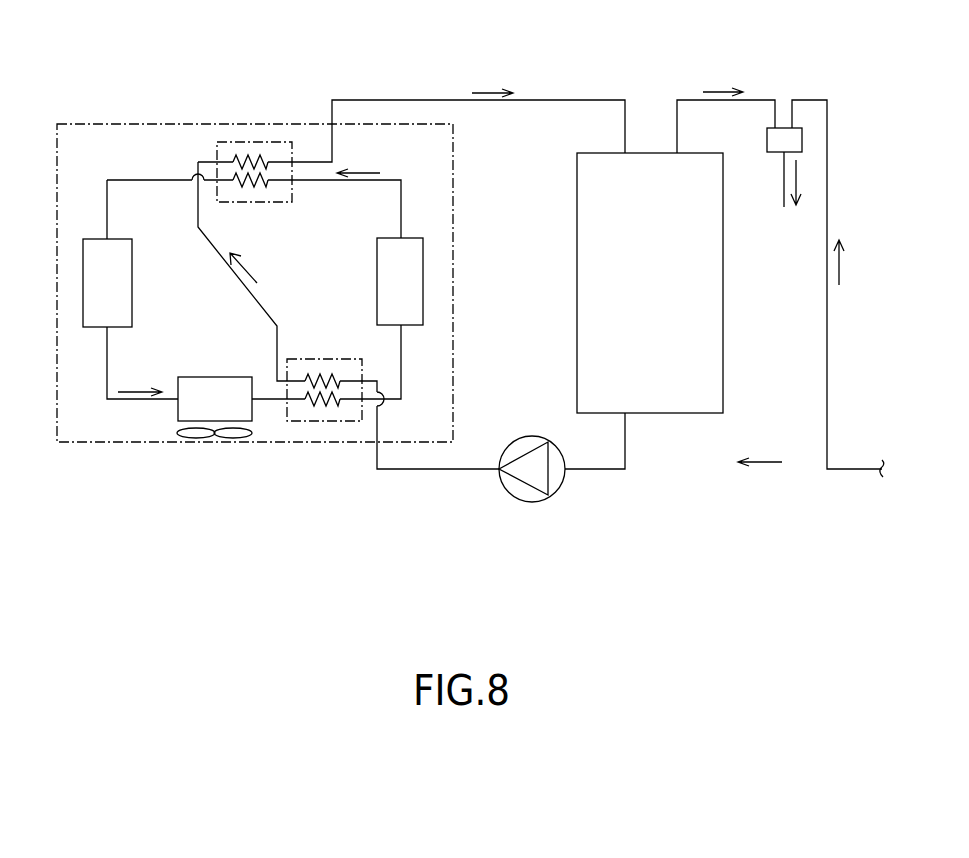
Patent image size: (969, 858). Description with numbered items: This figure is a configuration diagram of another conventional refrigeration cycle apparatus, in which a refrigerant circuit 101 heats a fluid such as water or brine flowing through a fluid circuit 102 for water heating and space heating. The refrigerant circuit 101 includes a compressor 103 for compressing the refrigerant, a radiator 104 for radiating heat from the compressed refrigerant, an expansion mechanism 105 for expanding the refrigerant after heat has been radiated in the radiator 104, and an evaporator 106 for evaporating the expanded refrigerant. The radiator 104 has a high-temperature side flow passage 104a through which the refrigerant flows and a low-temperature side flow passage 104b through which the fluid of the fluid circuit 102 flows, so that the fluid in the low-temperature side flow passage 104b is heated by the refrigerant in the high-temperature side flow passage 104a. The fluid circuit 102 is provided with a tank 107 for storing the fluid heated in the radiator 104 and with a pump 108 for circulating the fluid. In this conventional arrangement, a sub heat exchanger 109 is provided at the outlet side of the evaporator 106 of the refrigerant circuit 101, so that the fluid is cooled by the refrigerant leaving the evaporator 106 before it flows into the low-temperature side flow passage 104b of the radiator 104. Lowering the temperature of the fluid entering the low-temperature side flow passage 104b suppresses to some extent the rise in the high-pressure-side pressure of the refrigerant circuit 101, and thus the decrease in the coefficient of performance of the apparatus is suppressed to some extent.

The refrigerant circuit 101 is at (390, 178).
The fluid circuit 102 is at (213, 243).
The compressor 103 is at (408, 238).
The radiator 104 is at (283, 140).
The high-temperature side flow passage 104a is at (268, 183).
The low-temperature side flow passage 104b is at (252, 152).
The expansion mechanism 105 is at (132, 252).
The evaporator 106 is at (202, 377).
The tank 107 is at (723, 272).
The pump 108 is at (523, 500).
The sub heat exchanger 109 is at (295, 422).